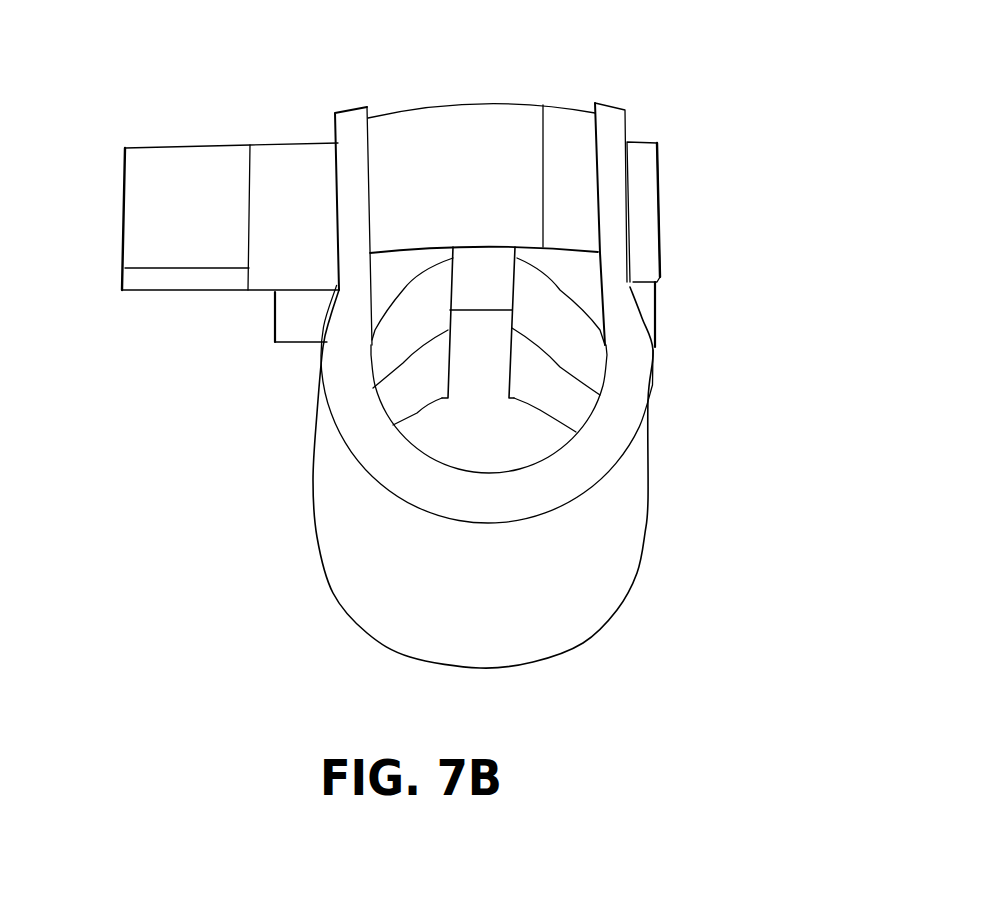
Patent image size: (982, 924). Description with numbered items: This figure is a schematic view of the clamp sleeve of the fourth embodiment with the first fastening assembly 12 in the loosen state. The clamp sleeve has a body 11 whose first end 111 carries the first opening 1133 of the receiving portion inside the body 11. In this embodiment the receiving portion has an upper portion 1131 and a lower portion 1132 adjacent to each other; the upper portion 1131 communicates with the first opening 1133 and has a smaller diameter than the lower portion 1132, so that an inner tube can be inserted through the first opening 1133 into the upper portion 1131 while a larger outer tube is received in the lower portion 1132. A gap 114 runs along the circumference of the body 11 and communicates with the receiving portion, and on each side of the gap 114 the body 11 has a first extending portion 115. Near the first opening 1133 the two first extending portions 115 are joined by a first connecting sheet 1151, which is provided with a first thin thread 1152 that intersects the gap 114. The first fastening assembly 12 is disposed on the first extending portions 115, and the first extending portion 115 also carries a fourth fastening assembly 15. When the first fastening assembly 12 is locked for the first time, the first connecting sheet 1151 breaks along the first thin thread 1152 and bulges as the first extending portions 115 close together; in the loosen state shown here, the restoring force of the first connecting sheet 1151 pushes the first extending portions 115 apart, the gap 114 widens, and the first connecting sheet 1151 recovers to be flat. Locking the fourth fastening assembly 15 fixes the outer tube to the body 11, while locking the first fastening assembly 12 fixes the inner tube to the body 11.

The body 11 is at (350, 535).
The first end 111 is at (510, 507).
The first opening 1133 is at (558, 452).
The upper portion 1131 is at (385, 355).
The lower portion 1132 is at (410, 397).
The gap 114 is at (495, 355).
The first connecting sheet 1151 is at (427, 173).
The first thin thread 1152 is at (543, 105).
The first extending portion 115 is at (348, 140).
The first fastening assembly 12 is at (162, 215).
The fourth fastening assembly 15 is at (290, 318).